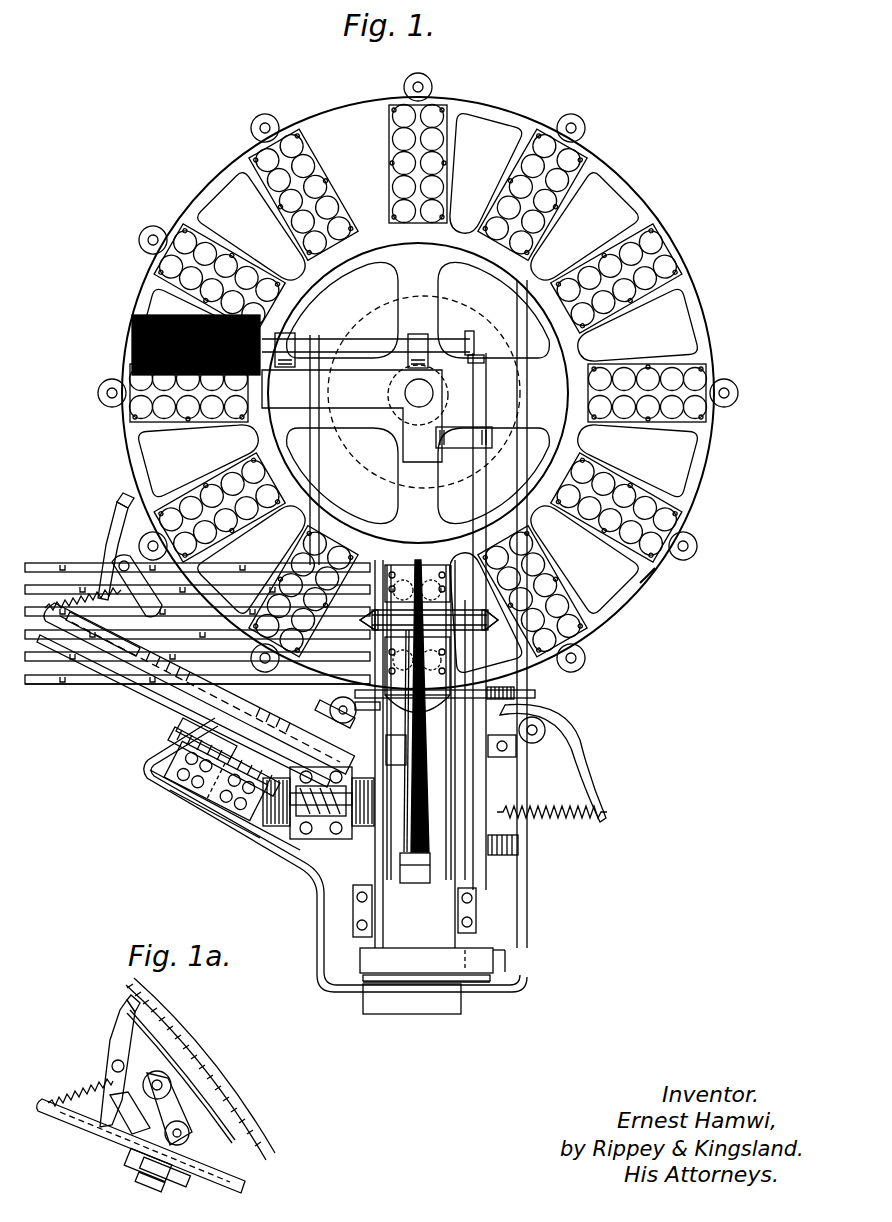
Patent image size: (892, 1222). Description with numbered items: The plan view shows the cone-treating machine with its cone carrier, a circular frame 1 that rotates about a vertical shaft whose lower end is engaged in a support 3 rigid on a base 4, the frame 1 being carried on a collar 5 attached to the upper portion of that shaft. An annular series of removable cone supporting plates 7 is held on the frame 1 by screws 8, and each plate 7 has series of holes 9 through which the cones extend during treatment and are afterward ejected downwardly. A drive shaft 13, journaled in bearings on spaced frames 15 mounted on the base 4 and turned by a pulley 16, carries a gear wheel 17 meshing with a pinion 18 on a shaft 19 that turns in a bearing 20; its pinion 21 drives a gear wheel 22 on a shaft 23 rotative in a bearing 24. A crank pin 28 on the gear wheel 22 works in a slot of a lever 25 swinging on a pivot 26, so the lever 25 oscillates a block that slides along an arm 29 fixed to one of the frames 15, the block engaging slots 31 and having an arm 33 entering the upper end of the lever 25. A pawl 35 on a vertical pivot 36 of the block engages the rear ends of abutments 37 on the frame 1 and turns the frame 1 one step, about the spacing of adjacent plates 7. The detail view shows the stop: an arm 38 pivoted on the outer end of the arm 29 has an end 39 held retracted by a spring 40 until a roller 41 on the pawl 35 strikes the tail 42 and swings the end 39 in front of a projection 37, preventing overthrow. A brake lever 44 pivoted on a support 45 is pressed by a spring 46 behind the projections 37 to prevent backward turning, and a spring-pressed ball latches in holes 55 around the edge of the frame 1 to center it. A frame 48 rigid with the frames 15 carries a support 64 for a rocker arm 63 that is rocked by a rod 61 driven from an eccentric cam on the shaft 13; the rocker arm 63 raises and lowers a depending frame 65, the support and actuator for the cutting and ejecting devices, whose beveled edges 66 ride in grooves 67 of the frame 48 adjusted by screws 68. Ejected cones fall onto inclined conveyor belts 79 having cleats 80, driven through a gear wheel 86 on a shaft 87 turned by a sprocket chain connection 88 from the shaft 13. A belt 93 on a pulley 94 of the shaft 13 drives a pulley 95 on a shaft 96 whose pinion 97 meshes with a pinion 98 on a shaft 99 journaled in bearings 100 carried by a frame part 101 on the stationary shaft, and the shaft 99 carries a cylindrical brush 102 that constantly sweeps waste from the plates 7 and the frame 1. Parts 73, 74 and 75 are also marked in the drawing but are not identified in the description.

In FIG. 1, the frame 1 is at (700, 318).
In FIG. 1A, the frame 1 is at (190, 1088).
In FIG. 1, the support 3 is at (385, 462).
In FIG. 1, the base 4 is at (490, 408).
In FIG. 1, the collar 5 is at (732, 392).
In FIG. 1, the cone supporting plates 7 is at (658, 420).
In FIG. 1, the removable screws 8 is at (678, 366).
In FIG. 1, the holes 9 is at (604, 270).
In FIG. 1, the drive shaft 13 is at (414, 982).
In FIG. 1, the spaced frames 15 is at (358, 905).
In FIG. 1, the pulley 16 is at (446, 995).
In FIG. 1, the gear wheel 17 is at (490, 770).
In FIG. 1, the pinion 18 is at (348, 832).
In FIG. 1, the shaft 19 is at (300, 830).
In FIG. 1, the bearing 20 is at (322, 840).
In FIG. 1, the pinion 21 is at (274, 826).
In FIG. 1, the gear wheel 22 is at (148, 765).
In FIG. 1, the shaft 23 is at (215, 798).
In FIG. 1, the bearing 24 is at (190, 782).
In FIG. 1, the lever 25 is at (262, 708).
In FIG. 1A, the lever 25 is at (140, 1178).
In FIG. 1, the pivot 26 is at (218, 748).
In FIG. 1, the crank pin 28 is at (236, 745).
In FIG. 1, the arm 29 is at (118, 650).
In FIG. 1A, the arm 29 is at (110, 1128).
In FIG. 1, the slots 31 is at (150, 660).
In FIG. 1, the arm 33 is at (262, 800).
In FIG. 1A, the arm 33 is at (145, 1186).
In FIG. 1, the pawl 35 is at (445, 694).
In FIG. 1A, the pawl 35 is at (178, 1118).
In FIG. 1, the vertical pivot 36 is at (368, 712).
In FIG. 1A, the vertical pivot 36 is at (184, 1140).
In FIG. 1, the abutments 37 is at (668, 572).
In FIG. 1A, the abutments 37 is at (140, 1033).
In FIG. 1, the arm 38 is at (106, 530).
In FIG. 1A, the arm 38 is at (116, 1022).
In FIG. 1, the end 39 is at (120, 506).
In FIG. 1A, the end 39 is at (127, 1002).
In FIG. 1, the spring 40 is at (84, 575).
In FIG. 1A, the spring 40 is at (86, 1070).
In FIG. 1A, the roller 41 is at (166, 1076).
In FIG. 1, the tail 42 is at (140, 595).
In FIG. 1A, the tail 42 is at (120, 1108).
In FIG. 1, the brake lever 44 is at (520, 712).
In FIG. 1, the support 45 is at (546, 732).
In FIG. 1, the spring 46 is at (583, 815).
In FIG. 1, the frame 48 is at (390, 768).
In FIG. 1, the holes 55 is at (695, 550).
In FIG. 1, the rod 61 is at (420, 883).
In FIG. 1, the rocker arm 63 is at (414, 810).
In FIG. 1, the support 64 is at (416, 760).
In FIG. 1, the depending frame 65 is at (414, 575).
In FIG. 1, the beveled edges 66 is at (366, 612).
In FIG. 1, the grooves 67 is at (360, 620).
In FIG. 1, the screws 68 is at (384, 582).
In FIG. 1A, the block 73 is at (128, 1164).
In FIG. 1, the pivot 74 is at (330, 710).
In FIG. 1, the link 75 is at (326, 712).
In FIG. 1, the conveyor belts 79 is at (55, 655).
In FIG. 1, the cleats 80 is at (74, 662).
In FIG. 1, the gear wheel 86 is at (516, 692).
In FIG. 1, the shaft 87 is at (506, 758).
In FIG. 1, the sprocket chain connection 88 is at (510, 855).
In FIG. 1, the belt 93 is at (472, 968).
In FIG. 1, the pulley 94 is at (370, 980).
In FIG. 1, the pulley 95 is at (493, 970).
In FIG. 1, the shaft 96 is at (465, 888).
In FIG. 1, the pinion 97 is at (488, 352).
In FIG. 1, the pinion 98 is at (470, 332).
In FIG. 1, the shaft 99 is at (300, 344).
In FIG. 1, the bearings 100 is at (288, 336).
In FIG. 1, the frame part 101 is at (345, 400).
In FIG. 1, the cylindrical brush 102 is at (138, 330).